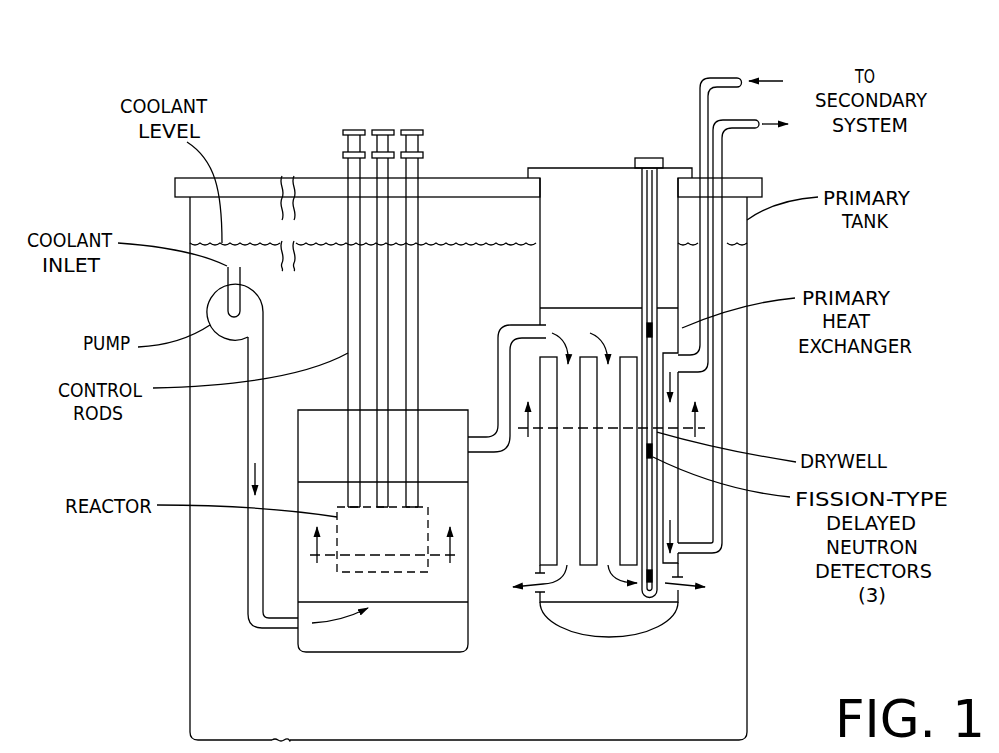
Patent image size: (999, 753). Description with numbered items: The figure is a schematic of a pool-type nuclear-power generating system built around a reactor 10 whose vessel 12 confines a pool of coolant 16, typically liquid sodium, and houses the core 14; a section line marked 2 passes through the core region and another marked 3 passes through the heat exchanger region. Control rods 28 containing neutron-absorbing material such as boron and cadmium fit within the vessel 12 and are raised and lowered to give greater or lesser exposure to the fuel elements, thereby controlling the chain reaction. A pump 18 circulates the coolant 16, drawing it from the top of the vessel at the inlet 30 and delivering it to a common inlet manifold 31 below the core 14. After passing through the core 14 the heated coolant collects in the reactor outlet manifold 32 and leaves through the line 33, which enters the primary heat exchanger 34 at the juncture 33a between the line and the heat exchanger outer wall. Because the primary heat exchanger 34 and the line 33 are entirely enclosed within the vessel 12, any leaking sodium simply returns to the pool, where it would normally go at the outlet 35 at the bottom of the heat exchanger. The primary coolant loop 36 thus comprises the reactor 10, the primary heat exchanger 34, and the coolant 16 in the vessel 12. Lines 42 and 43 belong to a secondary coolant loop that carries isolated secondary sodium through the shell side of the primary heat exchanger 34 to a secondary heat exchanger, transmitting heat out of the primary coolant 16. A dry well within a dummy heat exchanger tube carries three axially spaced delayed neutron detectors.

The reactor 10 is at (298, 147).
The vessel 12 is at (188, 575).
The core 14 is at (403, 575).
The coolant 16 is at (462, 279).
The pump 18 is at (258, 298).
The control rods 28 is at (418, 224).
The inlet 30 is at (235, 261).
The common inlet manifold 31 is at (450, 636).
The reactor outlet manifold 32 is at (465, 445).
The line 33 is at (492, 362).
The juncture 33a is at (541, 327).
The primary heat exchanger 34 is at (529, 286).
The outlet 35 is at (606, 582).
The primary coolant loop 36 is at (497, 462).
The line 42 is at (738, 117).
The line 43 is at (724, 76).
The section line 2- 2 is at (383, 559).
The section line 3- 3 is at (611, 406).